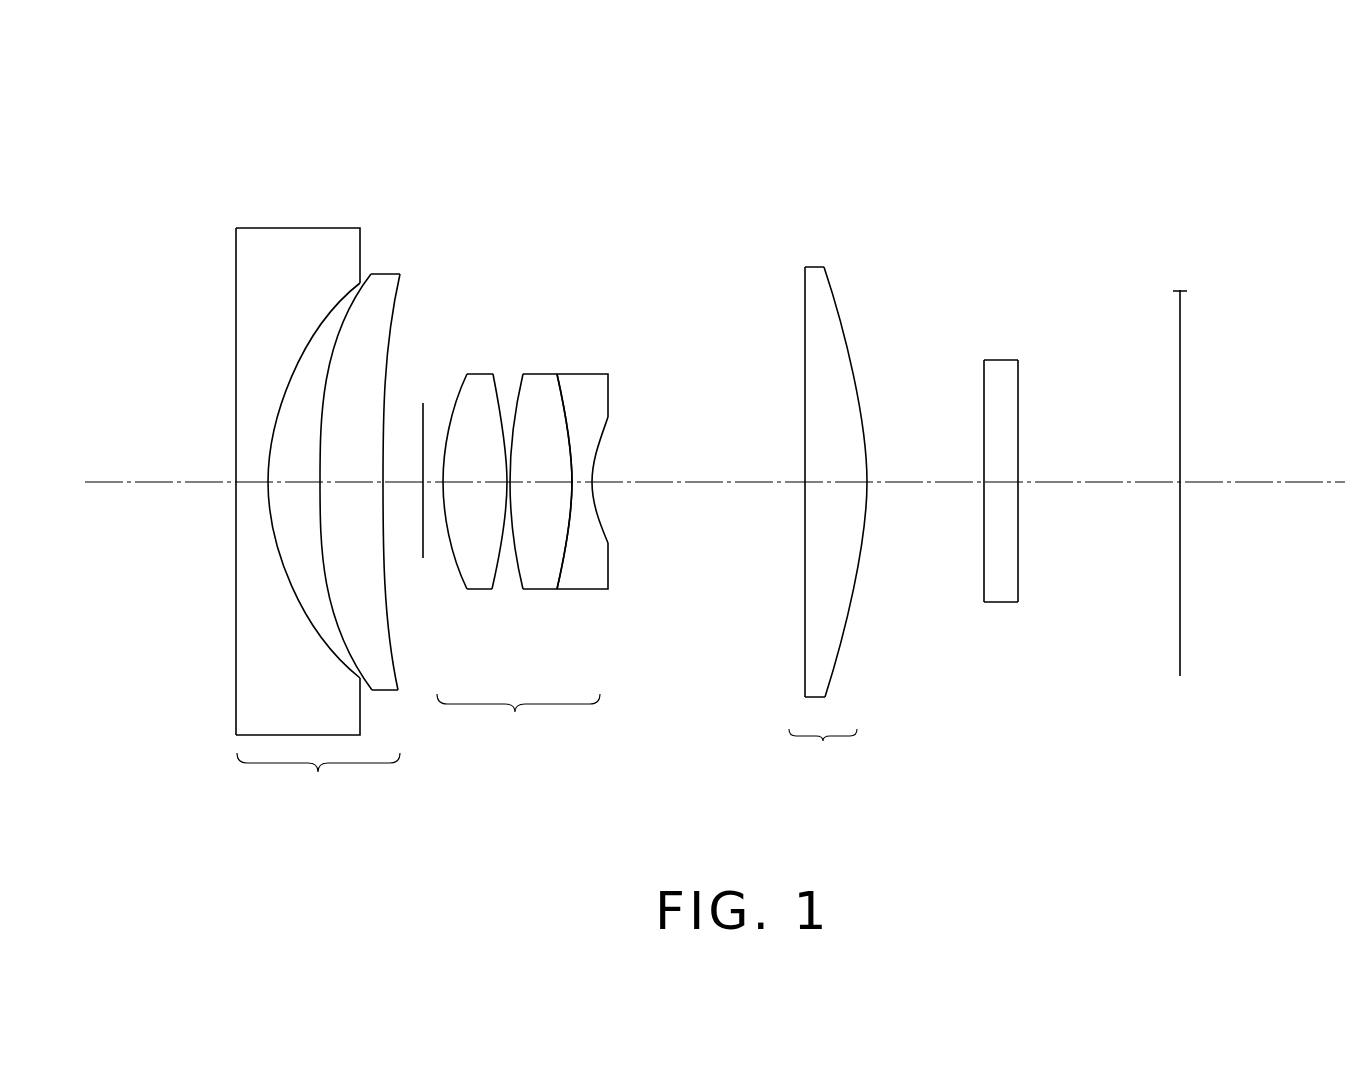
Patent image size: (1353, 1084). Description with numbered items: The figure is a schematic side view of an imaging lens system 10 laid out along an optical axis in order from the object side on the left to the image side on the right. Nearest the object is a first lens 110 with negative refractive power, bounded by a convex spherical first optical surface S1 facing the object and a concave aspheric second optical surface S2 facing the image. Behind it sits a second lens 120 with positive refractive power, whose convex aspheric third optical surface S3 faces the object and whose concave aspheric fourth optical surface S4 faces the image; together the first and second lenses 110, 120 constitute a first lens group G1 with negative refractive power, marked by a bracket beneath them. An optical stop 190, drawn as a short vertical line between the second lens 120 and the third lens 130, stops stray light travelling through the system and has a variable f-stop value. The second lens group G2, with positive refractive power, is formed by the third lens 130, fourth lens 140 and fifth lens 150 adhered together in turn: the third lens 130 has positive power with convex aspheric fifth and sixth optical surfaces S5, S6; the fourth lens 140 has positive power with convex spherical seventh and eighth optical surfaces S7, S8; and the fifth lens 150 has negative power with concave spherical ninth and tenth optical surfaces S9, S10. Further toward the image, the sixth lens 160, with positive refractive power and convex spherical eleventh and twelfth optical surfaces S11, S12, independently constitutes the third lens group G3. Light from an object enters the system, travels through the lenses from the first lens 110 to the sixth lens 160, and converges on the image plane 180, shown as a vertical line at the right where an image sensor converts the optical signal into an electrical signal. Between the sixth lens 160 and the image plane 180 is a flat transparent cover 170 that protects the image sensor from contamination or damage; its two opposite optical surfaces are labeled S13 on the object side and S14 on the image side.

The imaging lens system 10 is at (540, 153).
The first lens 110 is at (246, 450).
The second lens 120 is at (279, 433).
The third lens 130 is at (474, 502).
The fourth lens 140 is at (525, 453).
The fifth lens 150 is at (626, 440).
The sixth lens 160 is at (820, 468).
The transparent cover 170 is at (1005, 444).
The image plane 180 is at (1181, 372).
The optical stop 190 is at (385, 518).
The first lens group G1 is at (279, 490).
The second lens group G2 is at (558, 501).
The third lens group G3 is at (820, 481).
The first optical surface S1 is at (236, 328).
The second optical surface S2 is at (278, 398).
The third optical surface S3 is at (320, 447).
The fourth optical surface S4 is at (388, 590).
The fifth optical surface S5 is at (462, 570).
The sixth optical surface S6 is at (498, 573).
The seventh optical surface S7 is at (518, 397).
The eighth optical surface S8 is at (567, 557).
The ninth optical surface S9 is at (572, 452).
The tenth optical surface S10 is at (600, 523).
The eleventh optical surface S11 is at (805, 417).
The twelfth optical surface S12 is at (847, 613).
The optical surface of transparent cover S13 is at (983, 419).
The optical surface of transparent cover S14 is at (1020, 551).